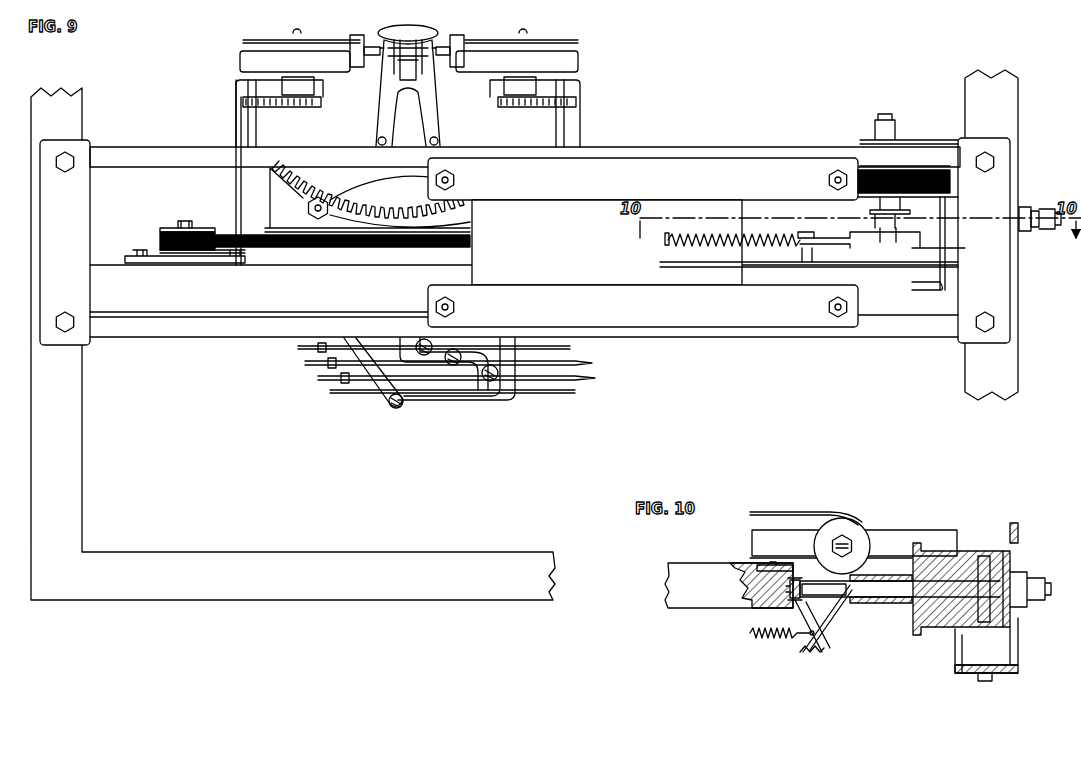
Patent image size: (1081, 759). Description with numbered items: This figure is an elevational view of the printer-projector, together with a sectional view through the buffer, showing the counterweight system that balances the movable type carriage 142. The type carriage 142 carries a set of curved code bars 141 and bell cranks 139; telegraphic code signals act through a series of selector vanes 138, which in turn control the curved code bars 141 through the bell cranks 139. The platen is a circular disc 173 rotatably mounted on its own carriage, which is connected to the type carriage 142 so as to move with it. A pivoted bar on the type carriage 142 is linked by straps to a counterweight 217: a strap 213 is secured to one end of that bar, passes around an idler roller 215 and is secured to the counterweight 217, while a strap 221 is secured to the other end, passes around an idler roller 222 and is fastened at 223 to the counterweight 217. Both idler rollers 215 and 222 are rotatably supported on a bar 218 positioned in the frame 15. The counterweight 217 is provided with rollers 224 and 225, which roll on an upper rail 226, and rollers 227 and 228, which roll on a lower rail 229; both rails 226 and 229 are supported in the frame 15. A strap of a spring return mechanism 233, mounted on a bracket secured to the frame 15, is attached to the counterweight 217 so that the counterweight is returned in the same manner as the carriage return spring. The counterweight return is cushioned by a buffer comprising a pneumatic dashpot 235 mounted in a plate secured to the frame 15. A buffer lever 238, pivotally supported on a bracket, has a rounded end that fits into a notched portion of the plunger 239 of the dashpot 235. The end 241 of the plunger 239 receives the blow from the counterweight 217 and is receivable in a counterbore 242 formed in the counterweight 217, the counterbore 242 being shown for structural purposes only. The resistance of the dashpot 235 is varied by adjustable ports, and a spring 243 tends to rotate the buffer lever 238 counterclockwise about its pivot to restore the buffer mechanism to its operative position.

In FIG. 9, the frame 15 is at (88, 113).
In FIG. 9, the platen disc 173 is at (420, 30).
In FIG. 9, the upper rail 226 is at (202, 147).
In FIG. 9, the roller 224 is at (440, 158).
In FIG. 9, the roller 225 is at (840, 158).
In FIG. 9, the counterweight 217 is at (580, 208).
In FIG. 10, the counterweight 217 is at (697, 604).
In FIG. 9, the spring return mechanism 233 is at (928, 172).
In FIG. 9, the type carriage 142 is at (290, 177).
In FIG. 9, the curved code bars 141 is at (354, 212).
In FIG. 9, the idler roller 215 is at (161, 233).
In FIG. 9, the strap 213 is at (226, 234).
In FIG. 9, the bar 218 is at (114, 267).
In FIG. 9, the spring 243 is at (668, 240).
In FIG. 10, the spring 243 is at (770, 645).
In FIG. 9, the dashpot 235 is at (940, 278).
In FIG. 10, the dashpot 235 is at (965, 550).
In FIG. 9, the roller 227 is at (498, 320).
In FIG. 9, the roller 228 is at (840, 328).
In FIG. 9, the lower rail 229 is at (228, 338).
In FIG. 9, the selector vanes 138 is at (590, 364).
In FIG. 9, the bell cranks 139 is at (418, 360).
In FIG. 10, the strap 221 is at (764, 513).
In FIG. 10, the idler roller 222 is at (855, 530).
In FIG. 10, the fastening point 223 is at (776, 568).
In FIG. 10, the plunger 239 is at (815, 597).
In FIG. 10, the plunger end 241 is at (820, 638).
In FIG. 10, the counterbore 242 is at (791, 606).
In FIG. 10, the buffer lever 238 is at (815, 654).